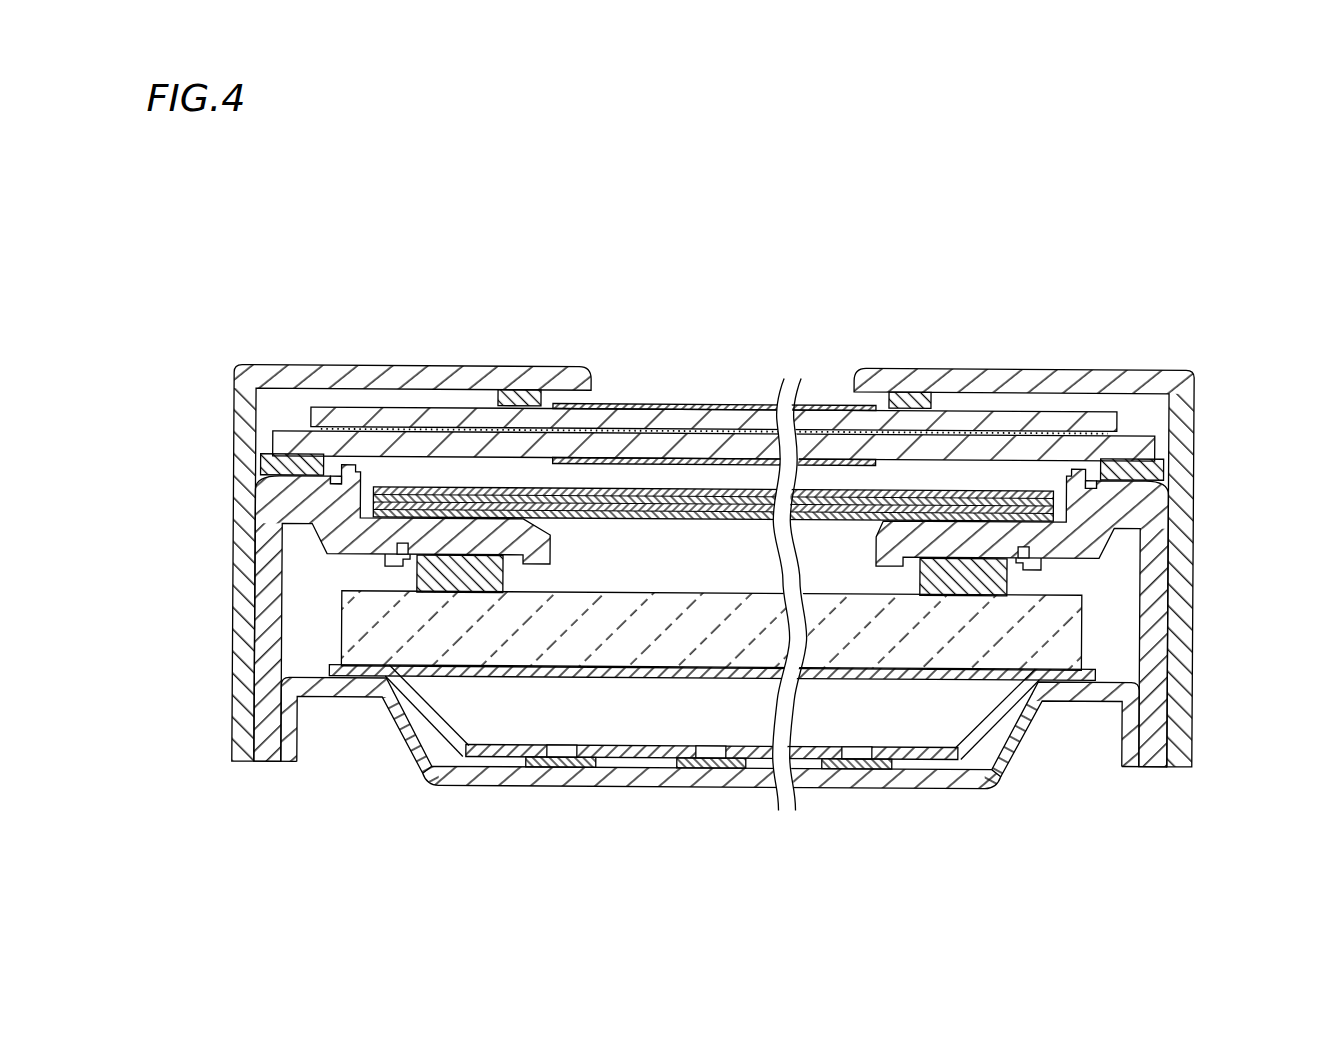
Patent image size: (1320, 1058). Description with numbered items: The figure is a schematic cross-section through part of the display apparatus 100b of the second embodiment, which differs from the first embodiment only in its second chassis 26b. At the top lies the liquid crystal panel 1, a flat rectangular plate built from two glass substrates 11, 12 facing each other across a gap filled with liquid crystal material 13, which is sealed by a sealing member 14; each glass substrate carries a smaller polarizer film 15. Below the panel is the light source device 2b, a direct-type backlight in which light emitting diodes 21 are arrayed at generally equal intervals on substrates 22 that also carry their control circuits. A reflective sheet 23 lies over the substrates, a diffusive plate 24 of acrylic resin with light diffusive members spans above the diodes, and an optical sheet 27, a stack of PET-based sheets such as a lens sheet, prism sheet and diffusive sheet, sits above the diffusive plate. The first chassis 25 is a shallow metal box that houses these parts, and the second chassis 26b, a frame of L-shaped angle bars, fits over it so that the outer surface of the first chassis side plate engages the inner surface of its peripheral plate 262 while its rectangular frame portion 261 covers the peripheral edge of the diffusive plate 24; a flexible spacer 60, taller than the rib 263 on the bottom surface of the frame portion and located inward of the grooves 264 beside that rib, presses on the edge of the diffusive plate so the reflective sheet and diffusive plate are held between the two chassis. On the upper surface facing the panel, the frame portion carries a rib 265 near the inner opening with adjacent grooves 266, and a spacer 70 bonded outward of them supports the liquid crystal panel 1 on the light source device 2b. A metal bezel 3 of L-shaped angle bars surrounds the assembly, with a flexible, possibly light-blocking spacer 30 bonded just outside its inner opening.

The display apparatus 100b is at (343, 265).
The liquid crystal panel 1 is at (712, 380).
The glass substrate 11 is at (645, 410).
The glass substrate 12 is at (615, 431).
The liquid crystal material 13 is at (697, 440).
The sealing member 14 is at (310, 417).
The polarizer film 15 is at (742, 458).
The light source device 2b is at (457, 792).
The light emitting diode 21 is at (576, 746).
The substrate 22 is at (563, 770).
The reflective sheet 23 is at (384, 727).
The diffusive plate 24 is at (995, 665).
The first chassis 25 is at (943, 789).
The second chassis 26b is at (268, 768).
The rectangular frame portion 261 is at (385, 532).
The peripheral plate 262 is at (262, 700).
The rib 263 is at (396, 551).
The groove 264 is at (392, 568).
The rib 265 is at (348, 467).
The groove 266 is at (336, 478).
The optical sheet 27 is at (727, 523).
The bezel 3 is at (1138, 369).
The spacer 30 is at (540, 392).
The spacer 60 is at (505, 573).
The spacer 70 is at (272, 462).